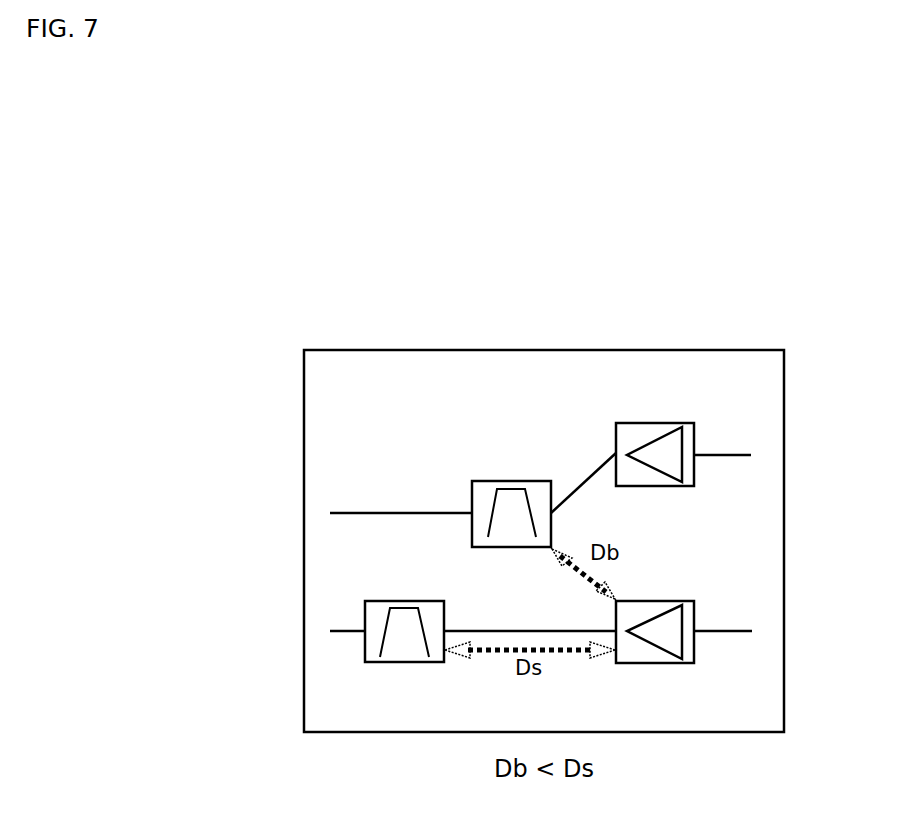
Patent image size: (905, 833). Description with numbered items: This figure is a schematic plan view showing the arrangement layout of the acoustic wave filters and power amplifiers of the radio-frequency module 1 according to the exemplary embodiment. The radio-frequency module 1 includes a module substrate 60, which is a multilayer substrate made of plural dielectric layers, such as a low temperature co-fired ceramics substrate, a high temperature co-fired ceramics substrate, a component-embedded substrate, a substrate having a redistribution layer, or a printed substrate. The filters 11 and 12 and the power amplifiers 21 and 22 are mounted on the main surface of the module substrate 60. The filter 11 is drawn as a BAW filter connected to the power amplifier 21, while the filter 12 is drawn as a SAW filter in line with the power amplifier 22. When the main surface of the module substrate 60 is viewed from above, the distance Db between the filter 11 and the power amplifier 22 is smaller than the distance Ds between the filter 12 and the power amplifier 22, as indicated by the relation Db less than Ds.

The radio-frequency module 1 is at (779, 316).
The module substrate 60 is at (784, 418).
The filter 11 is at (543, 480).
The filter 12 is at (445, 601).
The power amplifier 21 is at (656, 422).
The power amplifier 22 is at (658, 600).